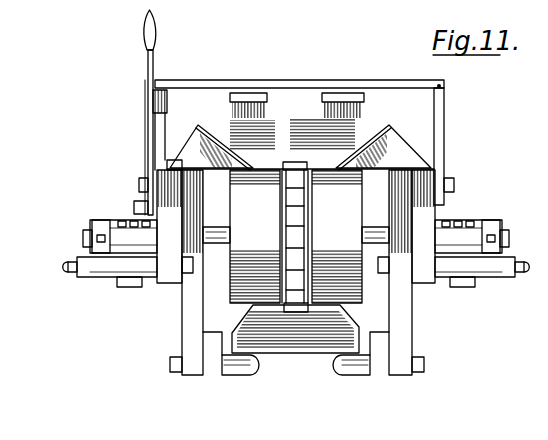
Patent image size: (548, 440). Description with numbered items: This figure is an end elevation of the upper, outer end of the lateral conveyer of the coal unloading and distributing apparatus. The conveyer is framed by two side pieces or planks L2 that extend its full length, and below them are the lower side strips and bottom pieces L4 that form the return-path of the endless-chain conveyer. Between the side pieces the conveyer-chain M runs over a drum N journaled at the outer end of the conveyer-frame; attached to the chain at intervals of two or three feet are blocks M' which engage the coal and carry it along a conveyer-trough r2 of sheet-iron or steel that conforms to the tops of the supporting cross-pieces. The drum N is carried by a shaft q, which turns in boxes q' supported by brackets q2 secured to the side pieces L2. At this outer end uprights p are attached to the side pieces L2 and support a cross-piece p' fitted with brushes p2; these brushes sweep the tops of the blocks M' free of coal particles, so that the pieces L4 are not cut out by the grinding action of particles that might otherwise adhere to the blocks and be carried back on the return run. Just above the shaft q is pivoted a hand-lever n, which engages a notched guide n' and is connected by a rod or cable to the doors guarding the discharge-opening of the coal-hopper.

The hand-lever n is at (133, 112).
The notched guide n' is at (133, 130).
The cross-piece p' is at (299, 64).
The brushes p2 is at (389, 103).
The uprights p is at (454, 144).
The conveyer-chain M is at (292, 209).
The conveyer-trough r2 is at (300, 147).
The boxes q' is at (296, 215).
The shaft q is at (294, 224).
The brackets q2 is at (503, 290).
The side pieces L2 is at (447, 310).
The drum N is at (337, 236).
The bottom pieces L4 is at (370, 372).
The blocks M' is at (295, 352).